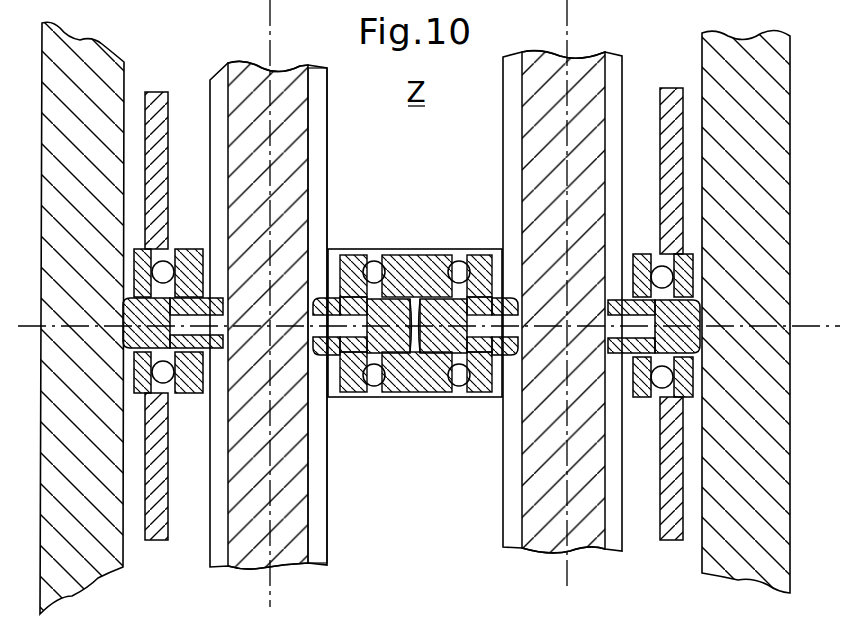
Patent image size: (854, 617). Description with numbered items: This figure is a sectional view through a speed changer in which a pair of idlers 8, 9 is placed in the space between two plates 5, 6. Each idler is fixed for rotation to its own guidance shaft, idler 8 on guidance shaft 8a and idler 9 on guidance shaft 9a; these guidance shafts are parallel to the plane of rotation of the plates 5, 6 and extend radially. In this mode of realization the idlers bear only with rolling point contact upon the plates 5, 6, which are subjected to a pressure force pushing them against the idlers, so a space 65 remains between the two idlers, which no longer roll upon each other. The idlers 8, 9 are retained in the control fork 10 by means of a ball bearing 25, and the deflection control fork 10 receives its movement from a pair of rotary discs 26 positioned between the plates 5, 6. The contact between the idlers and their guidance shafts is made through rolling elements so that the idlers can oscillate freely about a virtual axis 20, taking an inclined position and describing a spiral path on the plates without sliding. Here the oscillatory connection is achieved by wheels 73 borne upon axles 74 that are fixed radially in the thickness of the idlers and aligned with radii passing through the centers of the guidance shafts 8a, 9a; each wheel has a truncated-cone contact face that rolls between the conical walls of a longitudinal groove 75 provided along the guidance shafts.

The plate 5 is at (90, 552).
The plate 6 is at (723, 537).
The idler 8 is at (399, 322).
The guidance shaft 8a is at (282, 533).
The idler 9 is at (427, 325).
The guidance shaft 9a is at (542, 518).
The control fork 10 is at (418, 262).
The virtual axis 20 is at (722, 327).
The ball bearing 25 is at (652, 388).
The rotary disc 26 is at (163, 502).
The space 65 is at (415, 345).
The wheel 73 is at (318, 298).
The axle 74 is at (333, 396).
The longitudinal groove 75 is at (317, 448).